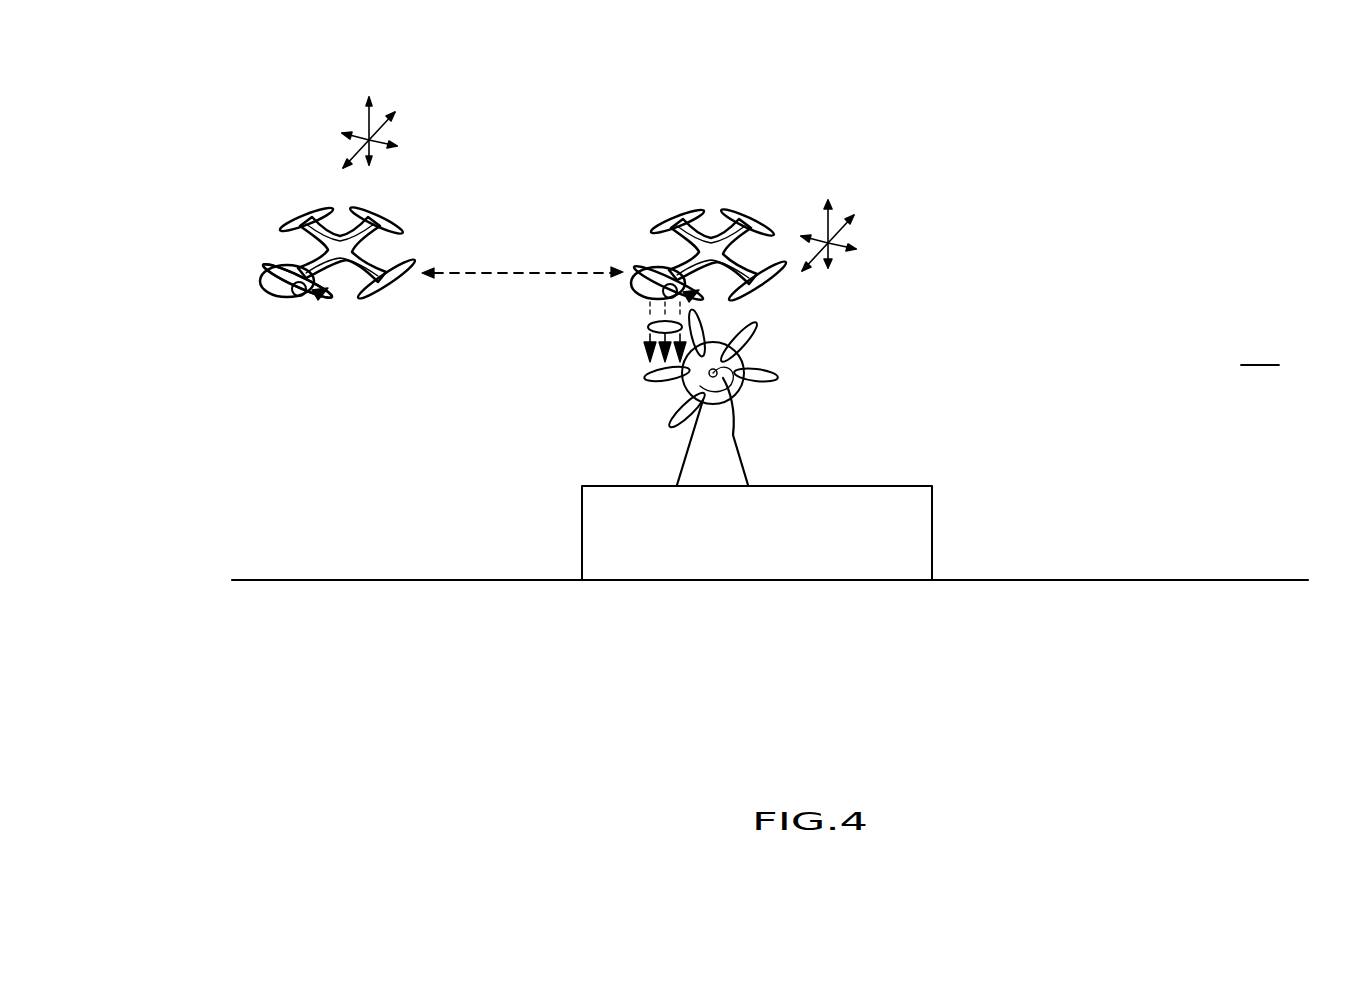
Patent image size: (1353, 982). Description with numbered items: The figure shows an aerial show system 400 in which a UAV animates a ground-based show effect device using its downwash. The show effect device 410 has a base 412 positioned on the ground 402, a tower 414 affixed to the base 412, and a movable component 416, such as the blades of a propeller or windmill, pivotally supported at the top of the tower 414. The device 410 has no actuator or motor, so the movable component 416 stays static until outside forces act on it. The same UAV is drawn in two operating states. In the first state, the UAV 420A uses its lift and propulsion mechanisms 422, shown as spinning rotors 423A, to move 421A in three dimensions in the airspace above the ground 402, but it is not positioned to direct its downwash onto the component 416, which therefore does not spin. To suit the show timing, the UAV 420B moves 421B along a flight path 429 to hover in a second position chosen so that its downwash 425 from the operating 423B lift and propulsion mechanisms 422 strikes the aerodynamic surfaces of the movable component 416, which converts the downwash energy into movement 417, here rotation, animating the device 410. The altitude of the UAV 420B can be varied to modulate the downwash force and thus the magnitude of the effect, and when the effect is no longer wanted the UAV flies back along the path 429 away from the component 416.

The aerial show system 400 is at (1143, 129).
The ground 402 is at (770, 596).
The show effect device 410 is at (858, 444).
The base 412 is at (932, 545).
The tower 414 is at (762, 441).
The movable component 416 is at (768, 394).
The movement 417 is at (675, 390).
The UAV in first operating state 420A is at (312, 266).
The UAV in second operating state 420B is at (572, 221).
The movement of UAV 421A is at (369, 140).
The movement of UAV 421B is at (828, 243).
The lift and propulsion mechanisms 422 is at (270, 238).
The spinning rotors 423A is at (272, 289).
The operating lift and propulsion mechanisms 423B is at (658, 262).
The downwash 425 is at (648, 326).
The flight path 429 is at (508, 272).